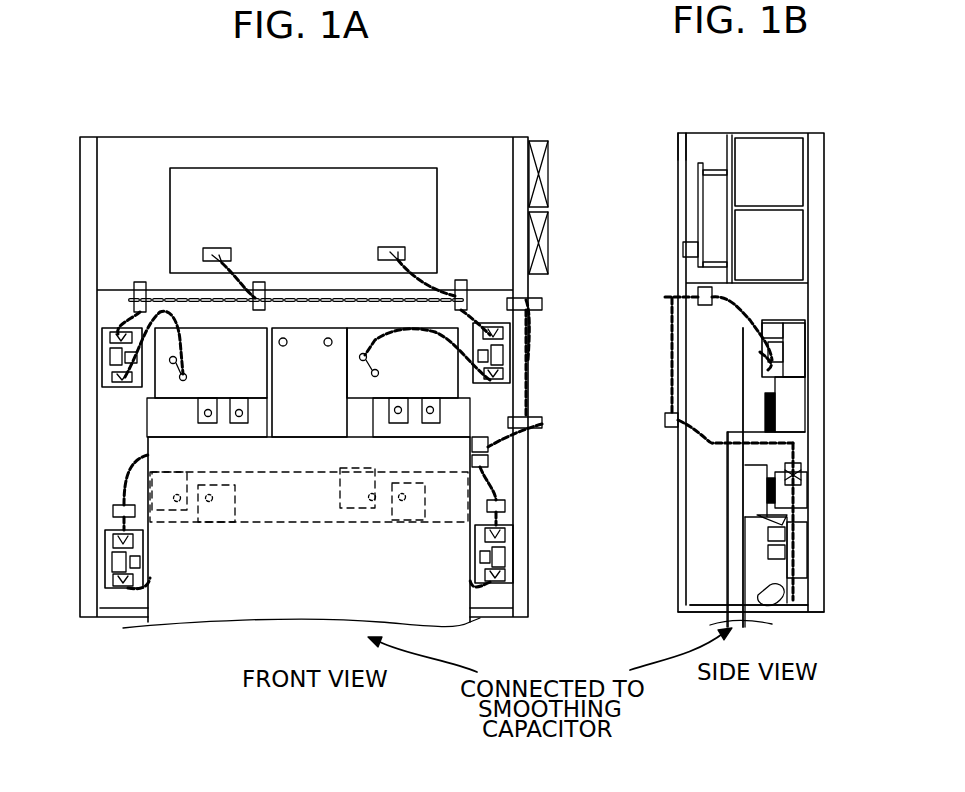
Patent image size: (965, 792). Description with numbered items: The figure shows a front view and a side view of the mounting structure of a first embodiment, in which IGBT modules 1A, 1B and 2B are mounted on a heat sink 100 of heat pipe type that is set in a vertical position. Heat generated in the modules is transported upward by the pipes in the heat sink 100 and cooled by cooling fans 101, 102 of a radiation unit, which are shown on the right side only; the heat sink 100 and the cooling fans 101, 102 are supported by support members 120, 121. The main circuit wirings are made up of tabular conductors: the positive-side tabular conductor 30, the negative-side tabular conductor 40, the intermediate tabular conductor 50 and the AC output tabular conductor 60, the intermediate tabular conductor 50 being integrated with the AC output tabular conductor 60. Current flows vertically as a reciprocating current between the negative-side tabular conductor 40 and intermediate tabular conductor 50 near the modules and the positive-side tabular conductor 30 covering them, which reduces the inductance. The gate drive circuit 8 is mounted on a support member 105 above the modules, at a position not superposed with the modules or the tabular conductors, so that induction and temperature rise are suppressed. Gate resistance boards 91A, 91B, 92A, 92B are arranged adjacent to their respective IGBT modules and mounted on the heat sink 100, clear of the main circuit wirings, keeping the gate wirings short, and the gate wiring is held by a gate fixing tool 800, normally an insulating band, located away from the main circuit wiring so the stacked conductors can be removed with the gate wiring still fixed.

In FIG. 1A, the heat sink 100 is at (98, 420).
In FIG. 1B, the heat sink 100 is at (815, 306).
In FIG. 1A, the gate drive circuit 8 is at (300, 180).
In FIG. 1B, the gate drive circuit 8 is at (690, 205).
In FIG. 1A, the cooling fan 101 is at (550, 167).
In FIG. 1B, the cooling fan 101 is at (782, 157).
In FIG. 1A, the cooling fan 102 is at (550, 242).
In FIG. 1B, the cooling fan 102 is at (782, 250).
In FIG. 1A, the gate fixing tool 800 is at (258, 282).
In FIG. 1B, the gate fixing tool 800 is at (623, 270).
In FIG. 1A, the gate resistance board 91A is at (104, 338).
In FIG. 1A, the gate resistance board 91B is at (512, 365).
In FIG. 1A, the gate resistance board 92A is at (105, 540).
In FIG. 1A, the gate resistance board 92B is at (514, 572).
In FIG. 1A, the IGBT module 1A is at (207, 382).
In FIG. 1A, the IGBT module 1B is at (408, 382).
In FIG. 1B, the IGBT module 1B is at (797, 402).
In FIG. 1A, the AC output tabular conductor 60 is at (305, 352).
In FIG. 1B, the AC output tabular conductor 60 is at (742, 340).
In FIG. 1A, the positive-side tabular conductor 30 is at (217, 597).
In FIG. 1B, the positive-side tabular conductor 30 is at (720, 530).
In FIG. 1B, the support member 121 is at (677, 150).
In FIG. 1B, the support member 105 is at (716, 165).
In FIG. 1B, the intermediate tabular conductor 50 is at (753, 468).
In FIG. 1B, the negative-side tabular conductor 40 is at (738, 585).
In FIG. 1B, the IGBT module 2B is at (805, 515).
In FIG. 1B, the support member 120 is at (805, 612).